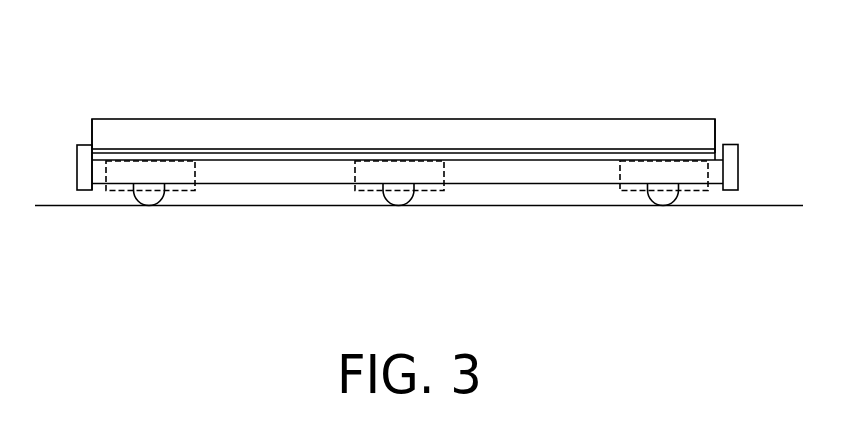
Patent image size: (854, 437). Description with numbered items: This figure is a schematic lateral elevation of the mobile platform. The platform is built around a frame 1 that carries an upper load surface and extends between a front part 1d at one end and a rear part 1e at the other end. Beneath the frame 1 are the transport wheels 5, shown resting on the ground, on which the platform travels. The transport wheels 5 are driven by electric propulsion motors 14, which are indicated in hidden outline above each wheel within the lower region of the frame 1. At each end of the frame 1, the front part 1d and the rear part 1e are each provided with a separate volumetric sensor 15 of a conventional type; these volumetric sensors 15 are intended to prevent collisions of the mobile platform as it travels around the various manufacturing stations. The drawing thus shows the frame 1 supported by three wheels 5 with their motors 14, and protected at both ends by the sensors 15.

The frame 1 is at (705, 108).
The front part 1d is at (91, 157).
The rear part 1e is at (724, 162).
The transport wheels 5 is at (146, 198).
The electric propulsion motors 14 is at (172, 173).
The volumetric sensors 15 is at (87, 183).